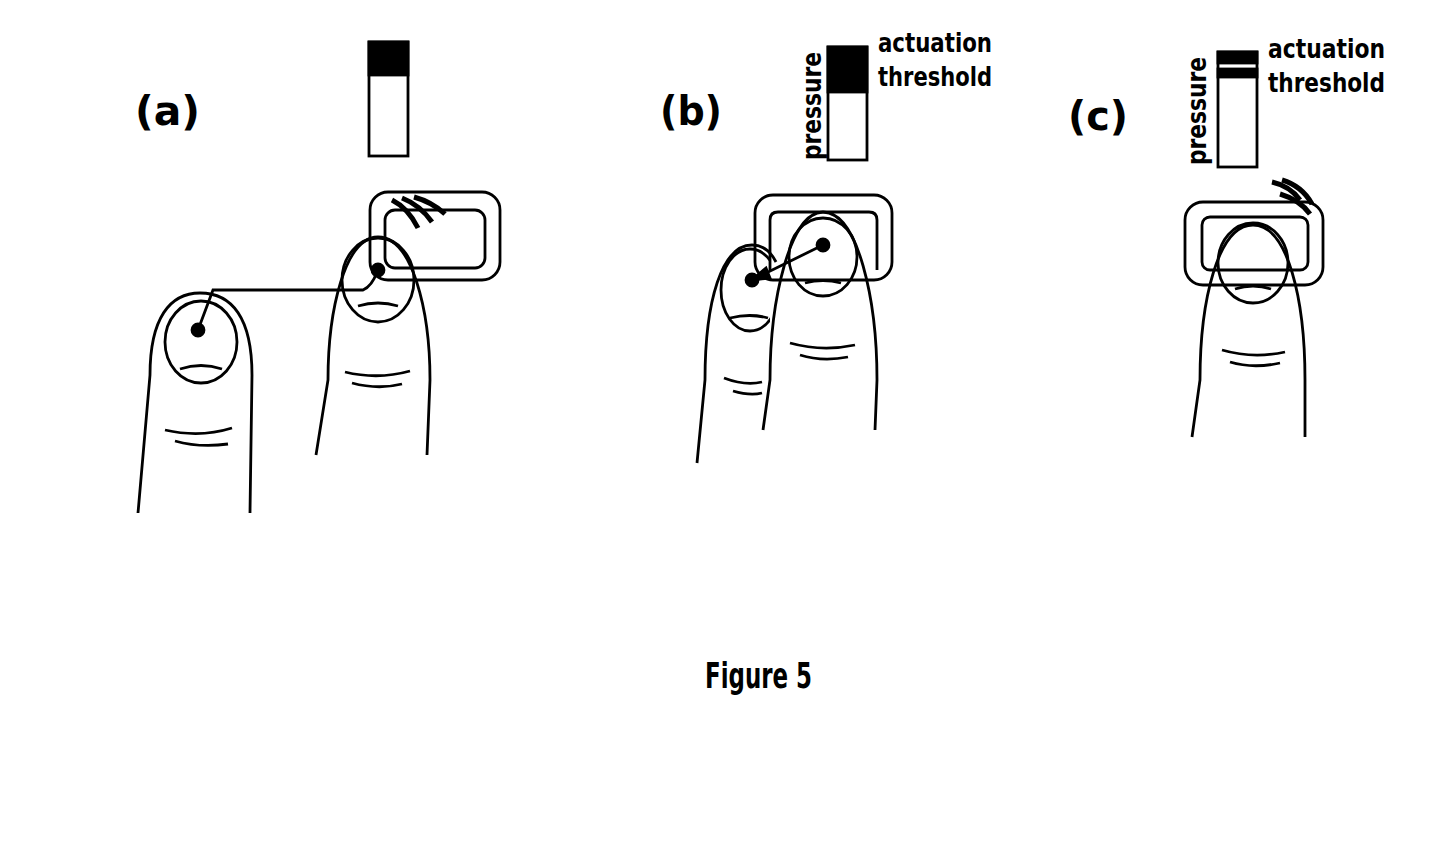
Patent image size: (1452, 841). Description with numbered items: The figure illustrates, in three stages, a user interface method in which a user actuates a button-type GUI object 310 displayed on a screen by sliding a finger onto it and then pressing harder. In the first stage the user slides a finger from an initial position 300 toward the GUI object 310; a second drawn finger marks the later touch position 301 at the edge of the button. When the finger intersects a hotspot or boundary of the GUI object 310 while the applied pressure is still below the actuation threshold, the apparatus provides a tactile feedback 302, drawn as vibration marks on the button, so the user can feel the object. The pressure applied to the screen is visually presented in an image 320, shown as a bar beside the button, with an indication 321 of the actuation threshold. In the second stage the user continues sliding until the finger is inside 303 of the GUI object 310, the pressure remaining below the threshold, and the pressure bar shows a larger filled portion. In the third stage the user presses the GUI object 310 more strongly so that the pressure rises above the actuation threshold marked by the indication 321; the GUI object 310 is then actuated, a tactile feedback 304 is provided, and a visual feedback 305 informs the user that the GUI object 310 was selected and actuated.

The initial position 300 is at (177, 325).
The second finger touch position 301 is at (353, 268).
The tactile feedback 302 is at (447, 236).
The inside of the GUI object 303 is at (843, 256).
The tactile feedback 304 is at (1293, 188).
The visual feedback 305 is at (1207, 228).
The GUI object 310 is at (460, 258).
The image 320 is at (390, 135).
The indication of the actuation threshold 321 is at (388, 62).